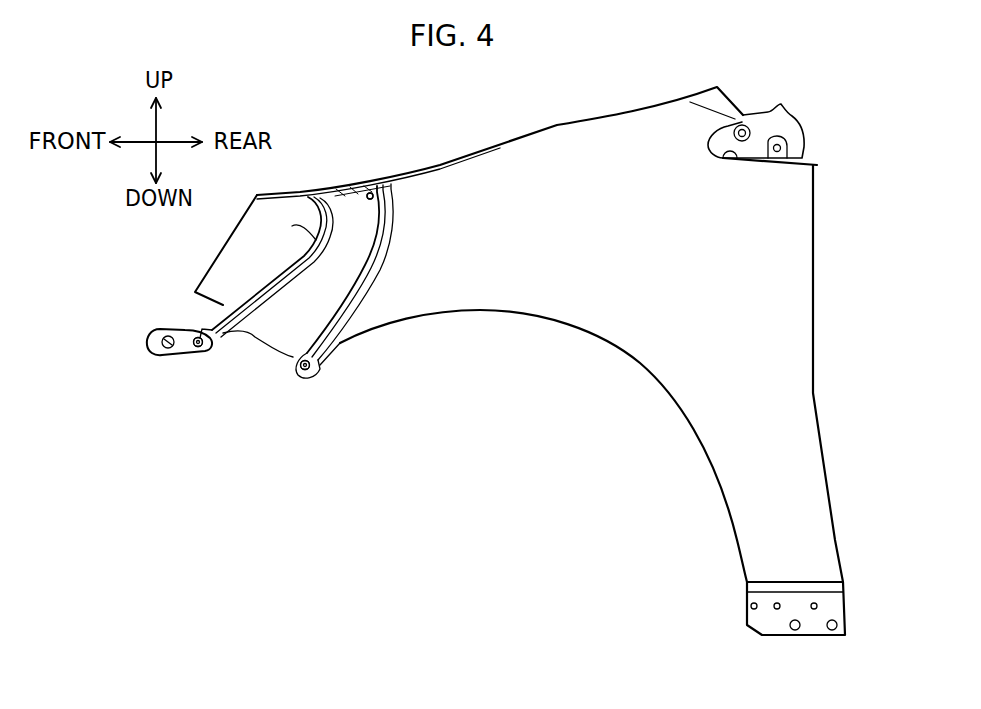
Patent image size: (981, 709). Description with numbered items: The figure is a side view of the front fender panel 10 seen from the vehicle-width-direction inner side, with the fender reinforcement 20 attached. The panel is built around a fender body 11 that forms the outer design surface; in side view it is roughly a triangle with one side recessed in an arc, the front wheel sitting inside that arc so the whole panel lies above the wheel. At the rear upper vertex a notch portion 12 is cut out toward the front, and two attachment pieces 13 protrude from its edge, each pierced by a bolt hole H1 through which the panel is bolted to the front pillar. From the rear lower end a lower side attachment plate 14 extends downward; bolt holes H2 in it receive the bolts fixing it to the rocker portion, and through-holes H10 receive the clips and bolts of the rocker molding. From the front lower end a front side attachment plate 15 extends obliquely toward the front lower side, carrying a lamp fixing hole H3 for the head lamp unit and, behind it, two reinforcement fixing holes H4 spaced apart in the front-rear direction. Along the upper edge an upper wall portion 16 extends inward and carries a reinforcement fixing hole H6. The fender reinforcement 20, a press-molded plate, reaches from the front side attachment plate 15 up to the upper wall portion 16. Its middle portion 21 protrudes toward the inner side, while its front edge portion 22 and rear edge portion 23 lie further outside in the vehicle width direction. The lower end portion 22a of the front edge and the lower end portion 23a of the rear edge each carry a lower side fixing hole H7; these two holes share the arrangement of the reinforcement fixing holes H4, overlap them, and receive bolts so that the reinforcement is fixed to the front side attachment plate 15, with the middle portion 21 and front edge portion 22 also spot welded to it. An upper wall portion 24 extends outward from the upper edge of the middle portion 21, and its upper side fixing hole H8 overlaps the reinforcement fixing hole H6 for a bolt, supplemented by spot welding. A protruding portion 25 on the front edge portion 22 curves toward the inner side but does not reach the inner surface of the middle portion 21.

The front fender panel 10 is at (584, 378).
The fender body 11 is at (815, 323).
The notch portion 12 is at (724, 162).
The attachment piece 13 is at (730, 145).
The lower side attachment plate 14 is at (625, 497).
The front side attachment plate 15 is at (151, 376).
The upper wall portion 16 is at (400, 170).
The fender reinforcement 20 is at (286, 283).
The middle portion 21 is at (310, 290).
The front edge portion 22 is at (237, 271).
The lower end portion 22a is at (210, 352).
The rear edge portion 23 is at (388, 233).
The lower end portion 23a is at (300, 378).
The upper wall portion 24 is at (337, 183).
The protruding portion 25 is at (310, 242).
The bolt hole H1 is at (733, 124).
The bolt hole H2 is at (831, 631).
The lamp fixing hole H3 is at (158, 341).
The reinforcement fixing hole H4 is at (252, 354).
The reinforcement fixing hole H6 is at (370, 196).
The lower side fixing hole H7 is at (198, 337).
The upper side fixing hole H8 is at (378, 197).
The through-hole H10 is at (814, 603).